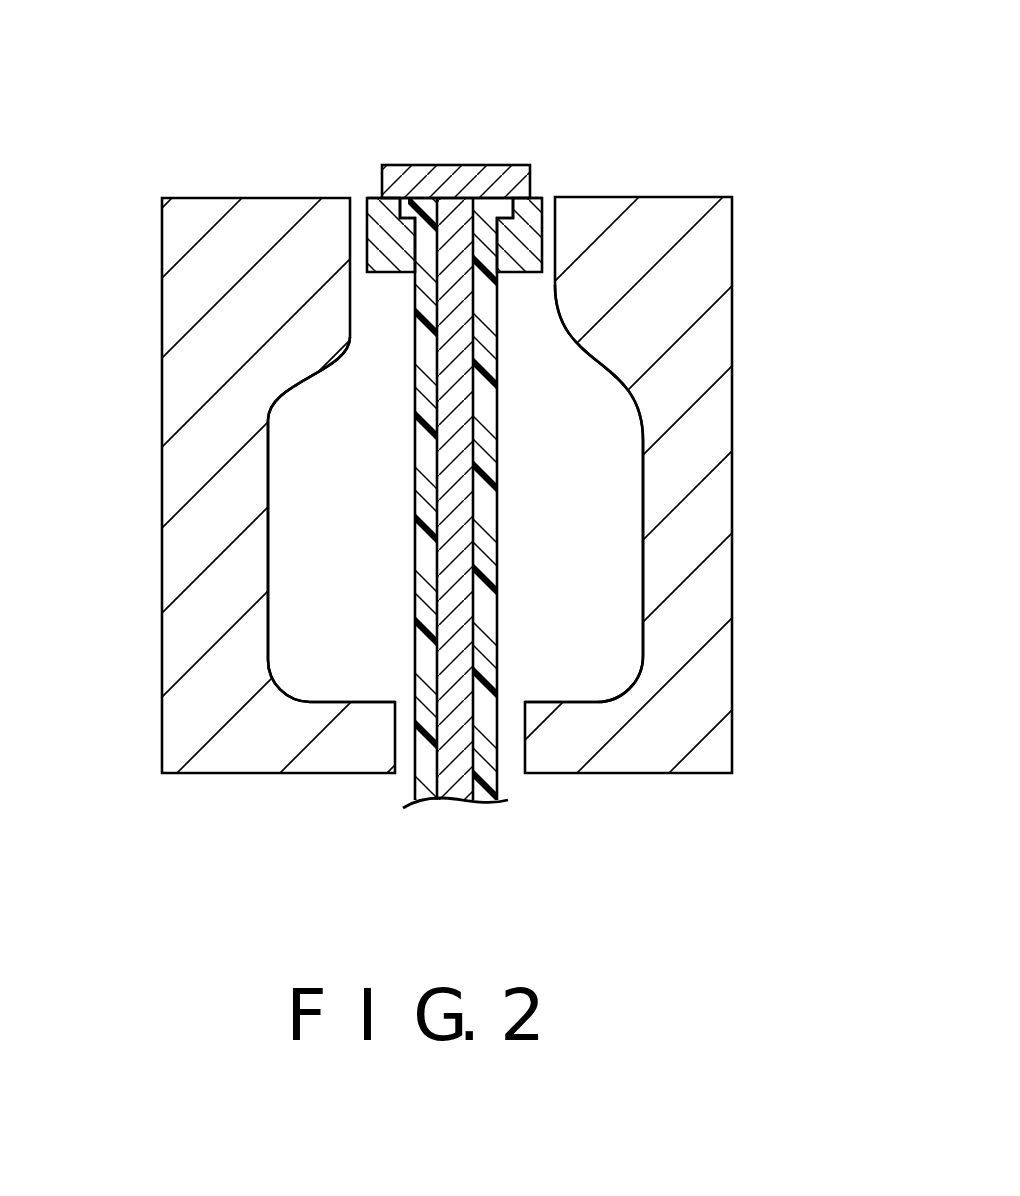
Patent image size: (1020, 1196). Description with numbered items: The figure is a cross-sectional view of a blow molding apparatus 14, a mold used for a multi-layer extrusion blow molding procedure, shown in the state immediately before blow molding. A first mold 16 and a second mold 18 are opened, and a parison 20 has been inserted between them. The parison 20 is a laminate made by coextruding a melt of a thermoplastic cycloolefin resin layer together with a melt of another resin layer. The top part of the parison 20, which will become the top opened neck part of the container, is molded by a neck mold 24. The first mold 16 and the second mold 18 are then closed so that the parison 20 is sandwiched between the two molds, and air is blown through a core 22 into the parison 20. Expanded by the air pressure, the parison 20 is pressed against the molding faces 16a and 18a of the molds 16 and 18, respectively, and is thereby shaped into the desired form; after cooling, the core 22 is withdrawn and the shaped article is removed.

The blow molding apparatus 14 is at (510, 459).
The first mold 16 is at (481, 553).
The molding face 16a is at (266, 616).
The second mold 18 is at (510, 551).
The molding face 18a is at (640, 604).
The parison 20 is at (447, 501).
The core 22 is at (447, 501).
The neck mold 24 is at (538, 197).